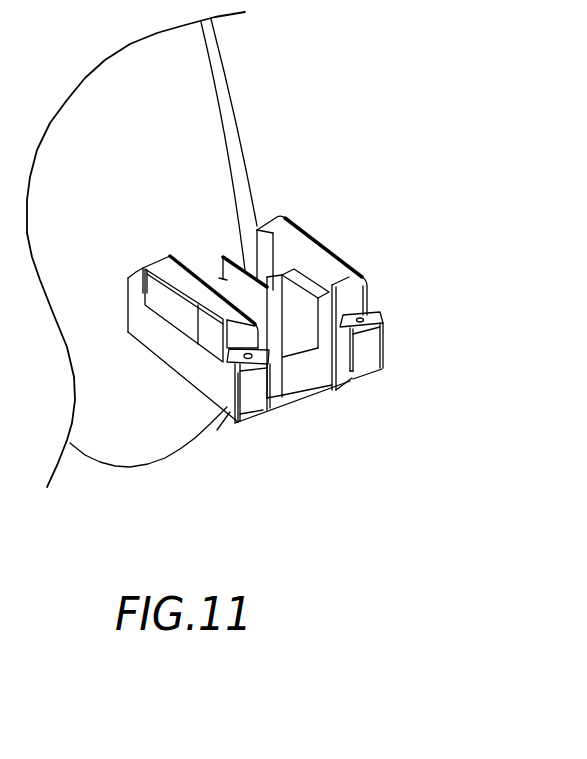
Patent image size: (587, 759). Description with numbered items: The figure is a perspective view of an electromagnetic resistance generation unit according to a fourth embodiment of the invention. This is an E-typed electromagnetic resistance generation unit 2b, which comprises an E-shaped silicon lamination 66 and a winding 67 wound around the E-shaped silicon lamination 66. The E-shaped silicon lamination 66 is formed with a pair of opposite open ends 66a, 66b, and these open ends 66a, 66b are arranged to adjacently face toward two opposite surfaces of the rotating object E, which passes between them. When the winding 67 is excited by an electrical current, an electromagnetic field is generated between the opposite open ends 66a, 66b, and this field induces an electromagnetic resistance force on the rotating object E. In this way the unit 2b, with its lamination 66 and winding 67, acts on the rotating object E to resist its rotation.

The rotating object E is at (231, 118).
The E-typed electromagnetic resistance generation unit 2b is at (292, 309).
The E-shaped silicon lamination 66 is at (283, 265).
The open end 66a is at (223, 256).
The open end 66b is at (262, 262).
The winding 67 is at (298, 345).